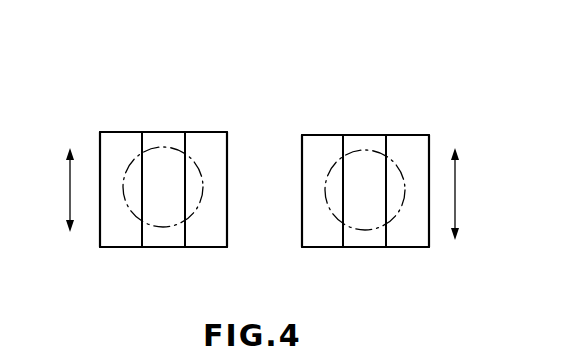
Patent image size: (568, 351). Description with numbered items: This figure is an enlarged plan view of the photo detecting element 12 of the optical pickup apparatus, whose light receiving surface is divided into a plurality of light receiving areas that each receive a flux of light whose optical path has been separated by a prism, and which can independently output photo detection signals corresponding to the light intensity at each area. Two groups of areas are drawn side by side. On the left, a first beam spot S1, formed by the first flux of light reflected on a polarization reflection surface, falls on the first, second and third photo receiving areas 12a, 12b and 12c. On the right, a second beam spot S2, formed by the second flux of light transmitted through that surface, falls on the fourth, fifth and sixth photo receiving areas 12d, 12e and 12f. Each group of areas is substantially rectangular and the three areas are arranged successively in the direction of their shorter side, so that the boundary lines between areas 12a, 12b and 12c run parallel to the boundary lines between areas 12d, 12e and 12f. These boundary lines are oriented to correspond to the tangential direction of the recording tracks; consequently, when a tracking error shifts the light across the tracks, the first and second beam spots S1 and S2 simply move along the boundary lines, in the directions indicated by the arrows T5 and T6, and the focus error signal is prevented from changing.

The photo detecting element 12 is at (276, 170).
The first photo receiving area 12a is at (116, 141).
The second photo receiving area 12b is at (165, 138).
The third photo receiving area 12c is at (217, 143).
The fourth photo receiving area 12d is at (320, 143).
The fifth photo receiving area 12e is at (375, 143).
The sixth photo receiving area 12f is at (415, 143).
The first beam spot S1 is at (146, 226).
The second beam spot S2 is at (363, 230).
The arrow indicating movement direction of first beam spot T5 is at (52, 190).
The arrow indicating movement direction of second beam spot T6 is at (468, 194).